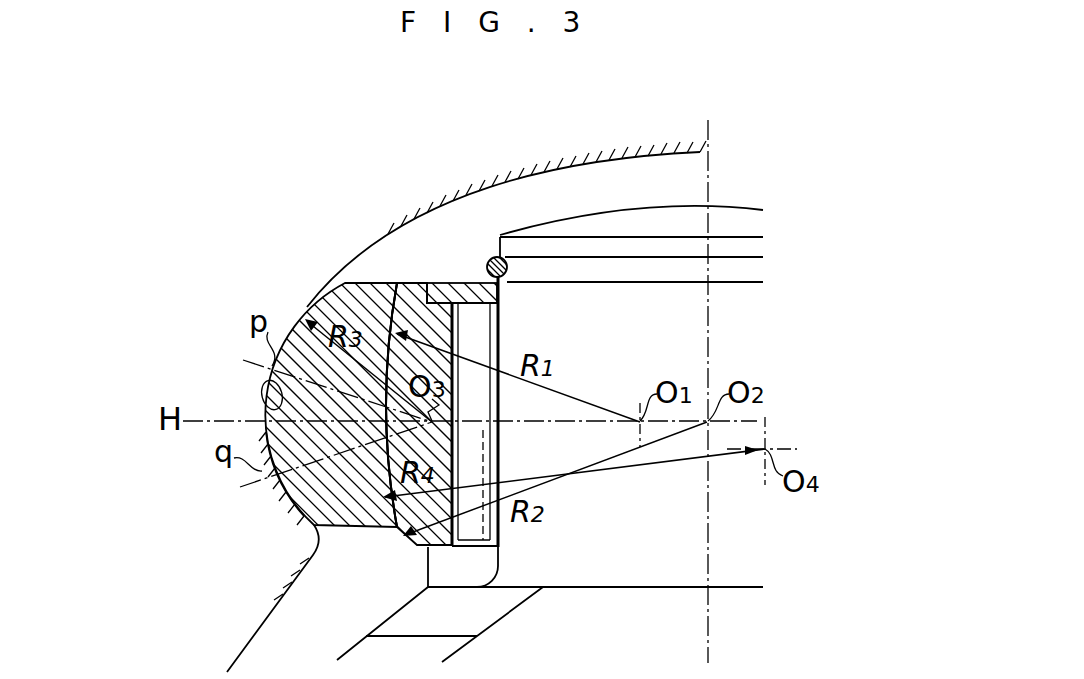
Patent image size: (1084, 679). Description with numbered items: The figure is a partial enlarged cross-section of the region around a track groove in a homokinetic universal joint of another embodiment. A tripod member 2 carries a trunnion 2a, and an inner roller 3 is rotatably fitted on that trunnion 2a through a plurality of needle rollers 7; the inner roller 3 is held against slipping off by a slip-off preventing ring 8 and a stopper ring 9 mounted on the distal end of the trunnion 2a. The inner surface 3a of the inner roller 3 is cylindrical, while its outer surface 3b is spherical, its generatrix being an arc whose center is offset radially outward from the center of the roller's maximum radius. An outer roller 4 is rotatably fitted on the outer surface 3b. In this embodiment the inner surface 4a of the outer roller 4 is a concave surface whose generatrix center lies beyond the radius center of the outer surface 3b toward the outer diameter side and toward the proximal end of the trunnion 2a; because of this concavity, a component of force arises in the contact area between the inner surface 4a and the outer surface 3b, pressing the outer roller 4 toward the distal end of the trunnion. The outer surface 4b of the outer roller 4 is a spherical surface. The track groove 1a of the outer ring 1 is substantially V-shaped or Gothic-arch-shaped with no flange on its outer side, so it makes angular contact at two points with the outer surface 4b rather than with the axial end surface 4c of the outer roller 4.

The outer ring 1 is at (230, 632).
The track groove 1a is at (262, 410).
The tripod member 2 is at (378, 637).
The trunnion 2a is at (625, 302).
The inner roller 3 is at (423, 548).
The inner surface of the inner roller 3a is at (464, 318).
The outer surface of the inner roller 3b is at (400, 304).
The outer roller 4 is at (307, 507).
The inner surface of the outer roller 4a is at (391, 515).
The outer surface of the outer roller 4b is at (275, 496).
The axial end surface of the outer roller 4c is at (362, 276).
The needle rollers 7 is at (498, 534).
The slip-off preventing ring 8 is at (470, 282).
The stopper ring 9 is at (497, 257).